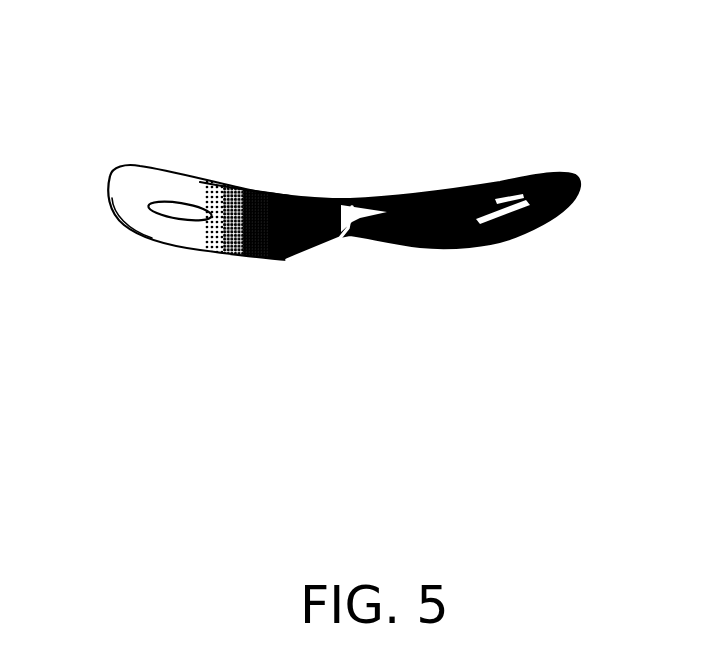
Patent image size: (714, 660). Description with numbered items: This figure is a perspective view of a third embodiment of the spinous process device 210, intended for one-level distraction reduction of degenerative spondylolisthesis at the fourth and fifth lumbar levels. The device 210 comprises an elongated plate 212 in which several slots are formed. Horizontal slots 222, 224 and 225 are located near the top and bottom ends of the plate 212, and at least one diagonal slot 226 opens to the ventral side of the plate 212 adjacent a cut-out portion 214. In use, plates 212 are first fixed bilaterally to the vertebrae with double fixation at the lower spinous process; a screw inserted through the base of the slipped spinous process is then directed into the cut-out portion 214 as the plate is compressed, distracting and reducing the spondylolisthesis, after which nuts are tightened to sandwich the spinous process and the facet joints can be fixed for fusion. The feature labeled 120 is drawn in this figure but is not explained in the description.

The strap 120 is at (172, 204).
The hanger device 210 is at (451, 104).
The upper edge of body 212 is at (263, 193).
The lower portion of body 214 is at (397, 252).
The aperture 222 is at (175, 217).
The distal end portion 224 is at (503, 233).
The slot 225 is at (510, 186).
The notch 226 is at (352, 208).